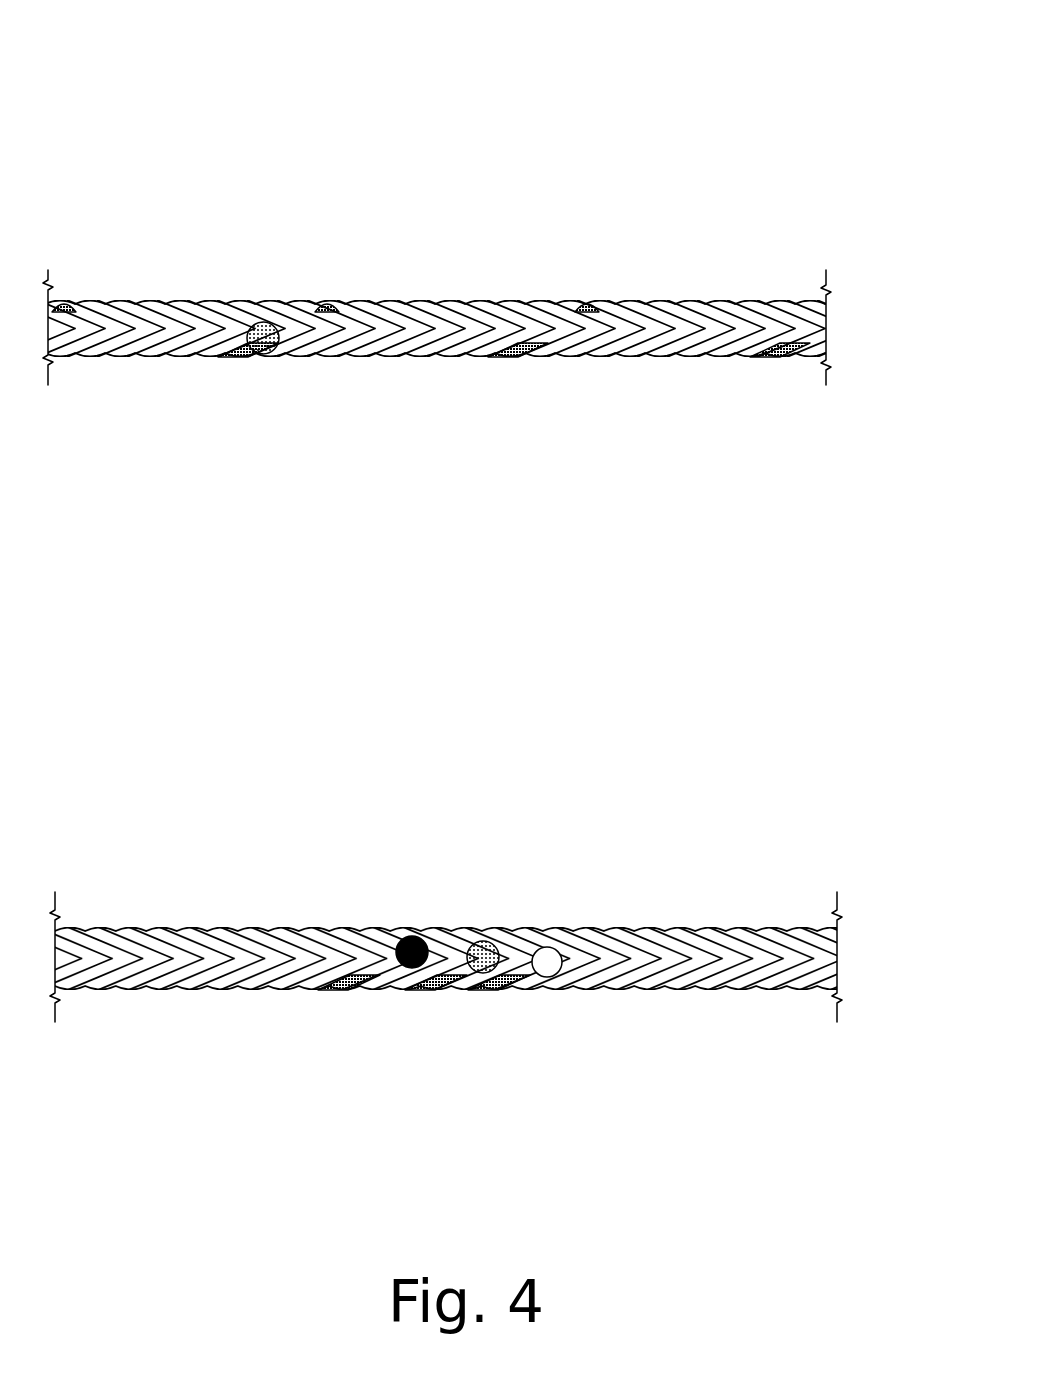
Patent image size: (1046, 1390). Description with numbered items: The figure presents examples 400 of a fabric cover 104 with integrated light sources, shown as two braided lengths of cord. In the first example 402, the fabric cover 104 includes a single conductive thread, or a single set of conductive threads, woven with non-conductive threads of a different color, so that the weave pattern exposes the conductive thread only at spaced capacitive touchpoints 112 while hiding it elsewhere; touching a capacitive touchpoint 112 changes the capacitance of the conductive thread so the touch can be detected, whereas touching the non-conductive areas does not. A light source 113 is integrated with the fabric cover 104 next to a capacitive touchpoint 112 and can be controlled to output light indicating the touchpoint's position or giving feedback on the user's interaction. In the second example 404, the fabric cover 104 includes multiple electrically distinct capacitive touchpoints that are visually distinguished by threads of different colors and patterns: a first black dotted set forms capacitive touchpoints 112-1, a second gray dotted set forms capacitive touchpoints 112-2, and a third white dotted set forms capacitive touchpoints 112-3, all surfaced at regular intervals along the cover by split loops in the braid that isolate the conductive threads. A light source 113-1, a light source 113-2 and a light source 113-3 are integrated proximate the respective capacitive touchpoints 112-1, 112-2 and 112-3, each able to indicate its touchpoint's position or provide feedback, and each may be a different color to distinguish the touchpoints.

The examples of fabric cover with integrated light sources 400 is at (786, 69).
The first example 402 is at (676, 268).
The second example 404 is at (712, 896).
The fabric cover 104 is at (442, 666).
The capacitive touchpoints 112 is at (237, 353).
The light source 113 is at (253, 323).
The capacitive touchpoints 112-1 is at (335, 992).
The capacitive touchpoints 112-2 is at (422, 992).
The capacitive touchpoints 112-3 is at (485, 992).
The light source 113-1 is at (408, 937).
The light source 113-2 is at (478, 942).
The light source 113-3 is at (544, 947).